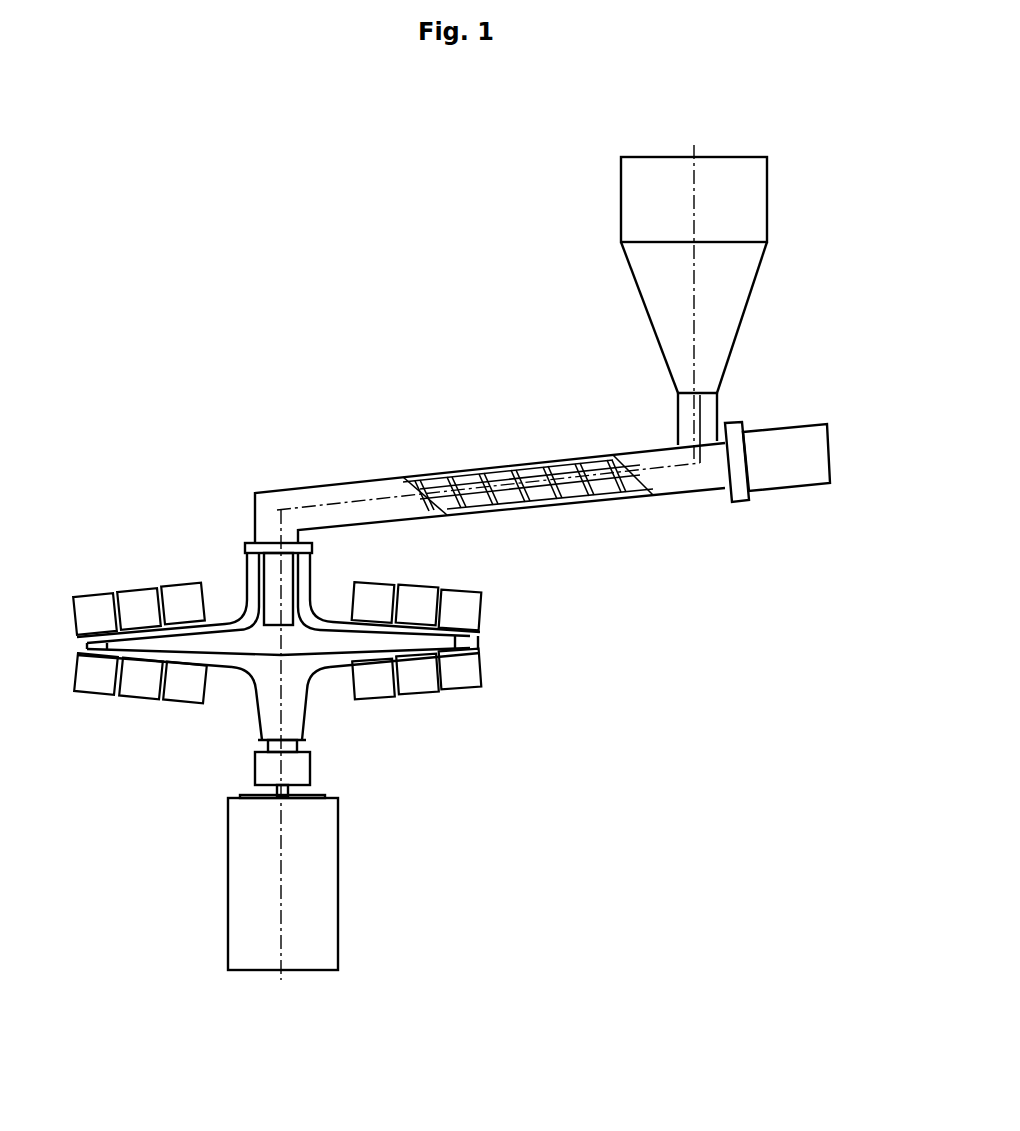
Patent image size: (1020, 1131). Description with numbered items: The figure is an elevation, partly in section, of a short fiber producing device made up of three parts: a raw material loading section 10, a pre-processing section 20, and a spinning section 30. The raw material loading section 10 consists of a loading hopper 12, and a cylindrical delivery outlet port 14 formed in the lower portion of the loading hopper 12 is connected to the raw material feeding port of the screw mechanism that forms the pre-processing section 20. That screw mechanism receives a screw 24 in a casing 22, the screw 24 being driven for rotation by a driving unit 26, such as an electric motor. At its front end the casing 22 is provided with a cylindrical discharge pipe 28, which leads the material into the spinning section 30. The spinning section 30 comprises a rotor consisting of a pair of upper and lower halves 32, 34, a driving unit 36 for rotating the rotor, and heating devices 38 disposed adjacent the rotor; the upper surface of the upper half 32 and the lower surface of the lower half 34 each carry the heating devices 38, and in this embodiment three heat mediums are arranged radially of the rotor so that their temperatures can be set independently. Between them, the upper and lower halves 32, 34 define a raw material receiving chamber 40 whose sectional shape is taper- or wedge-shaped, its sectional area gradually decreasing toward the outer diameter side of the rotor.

The raw material loading section 10 is at (573, 289).
The loading hopper 12 is at (748, 314).
The cylindrical delivery outlet port 14 is at (678, 404).
The pre-processing section 20 is at (366, 397).
The casing 22 is at (673, 480).
The screw 24 is at (440, 476).
The driving unit 26 is at (788, 437).
The cylindrical discharge pipe 28 is at (288, 578).
The spinning section 30 is at (111, 562).
The upper half 32 is at (224, 621).
The lower half 34 is at (230, 664).
The driving unit 36 is at (335, 948).
The heating devices 38 is at (492, 690).
The raw material receiving chamber 40 is at (314, 638).